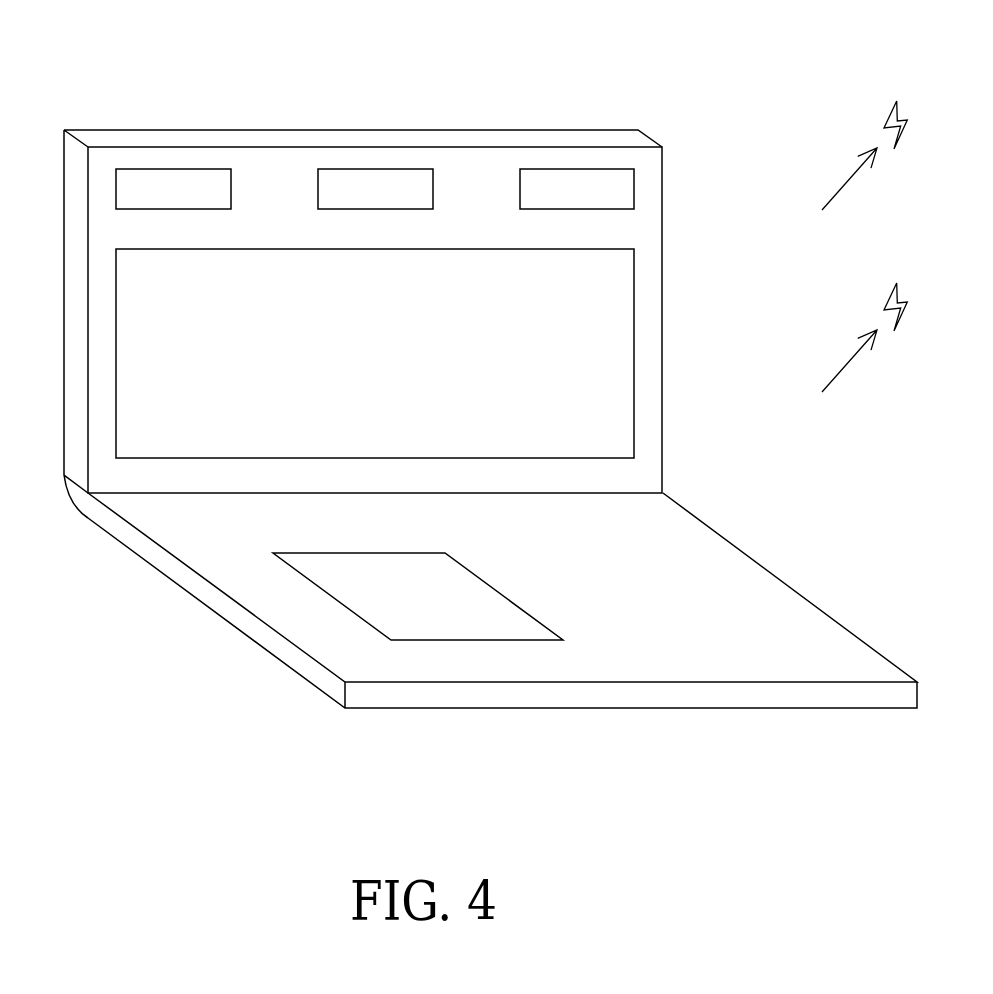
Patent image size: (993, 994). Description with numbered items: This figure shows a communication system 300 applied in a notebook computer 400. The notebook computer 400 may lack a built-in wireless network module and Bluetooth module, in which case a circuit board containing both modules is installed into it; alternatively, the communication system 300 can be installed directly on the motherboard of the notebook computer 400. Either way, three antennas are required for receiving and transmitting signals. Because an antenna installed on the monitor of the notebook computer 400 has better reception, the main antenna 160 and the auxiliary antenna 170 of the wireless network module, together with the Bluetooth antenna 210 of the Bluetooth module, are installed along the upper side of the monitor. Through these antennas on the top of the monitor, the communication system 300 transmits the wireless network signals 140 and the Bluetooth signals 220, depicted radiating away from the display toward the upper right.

The wireless network signals 140 is at (903, 120).
The main antenna 160 is at (155, 168).
The auxiliary antenna 170 is at (358, 168).
The Bluetooth antenna 210 is at (560, 168).
The Bluetooth signals 220 is at (903, 303).
The communication system 300 is at (473, 640).
The notebook computer 400 is at (748, 552).